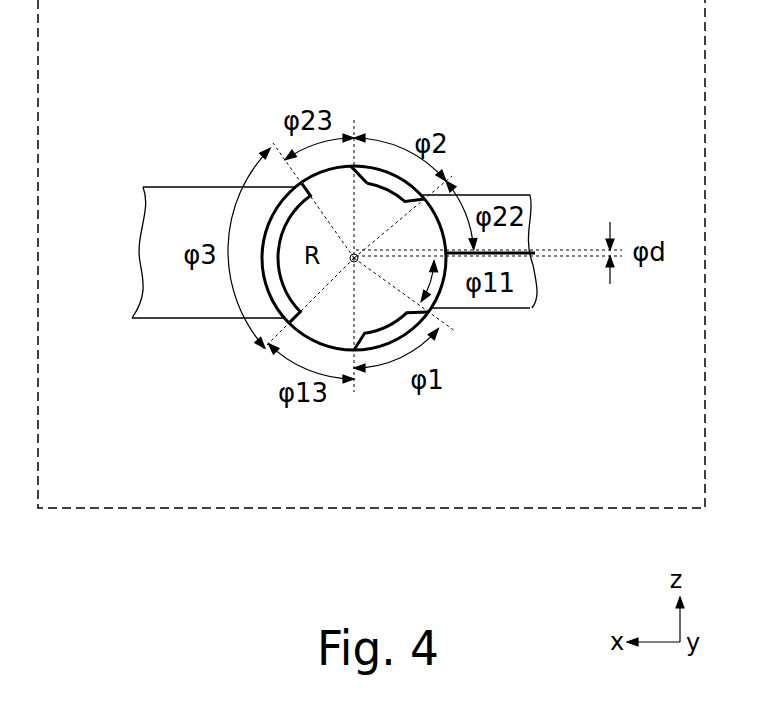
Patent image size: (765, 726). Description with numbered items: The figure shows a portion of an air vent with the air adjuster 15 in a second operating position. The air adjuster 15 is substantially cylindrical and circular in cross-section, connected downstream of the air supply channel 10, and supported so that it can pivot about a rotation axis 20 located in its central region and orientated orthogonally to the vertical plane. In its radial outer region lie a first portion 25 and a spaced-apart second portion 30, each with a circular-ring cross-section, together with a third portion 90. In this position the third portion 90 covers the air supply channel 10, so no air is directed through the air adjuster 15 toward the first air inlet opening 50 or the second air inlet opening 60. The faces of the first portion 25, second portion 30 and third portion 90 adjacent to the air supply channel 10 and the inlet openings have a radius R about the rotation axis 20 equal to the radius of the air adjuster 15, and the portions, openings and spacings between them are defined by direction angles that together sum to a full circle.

The air supply channel 10 is at (155, 238).
The air adjuster 15 is at (312, 283).
The rotation axis 20 is at (360, 176).
The first portion 25 is at (388, 333).
The second portion 30 is at (378, 184).
The first air inlet opening 50 is at (473, 202).
The second air inlet opening 60 is at (518, 298).
The third portion 90 is at (283, 222).